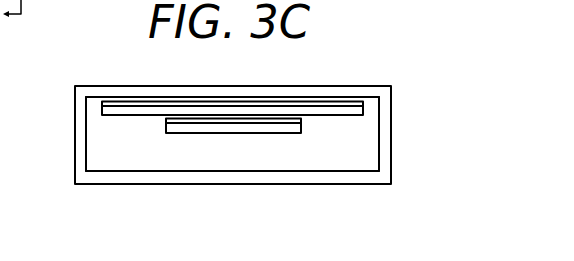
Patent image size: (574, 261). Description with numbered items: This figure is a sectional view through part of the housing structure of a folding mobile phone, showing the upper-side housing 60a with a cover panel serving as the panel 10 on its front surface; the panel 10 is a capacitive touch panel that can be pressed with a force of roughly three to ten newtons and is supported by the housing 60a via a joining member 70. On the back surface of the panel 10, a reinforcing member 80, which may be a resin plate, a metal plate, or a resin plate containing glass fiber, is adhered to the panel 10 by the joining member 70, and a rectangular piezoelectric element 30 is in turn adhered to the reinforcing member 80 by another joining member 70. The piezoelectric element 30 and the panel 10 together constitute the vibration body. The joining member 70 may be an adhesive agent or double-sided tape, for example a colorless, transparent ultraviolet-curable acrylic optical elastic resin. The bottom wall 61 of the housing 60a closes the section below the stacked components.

The panel 10 is at (330, 91).
The piezoelectric element 30 is at (187, 127).
The upper-side housing 60a is at (392, 129).
The bottom wall of housing 61 is at (199, 177).
The joining member 70 is at (152, 101).
The reinforcing member 80 is at (117, 110).